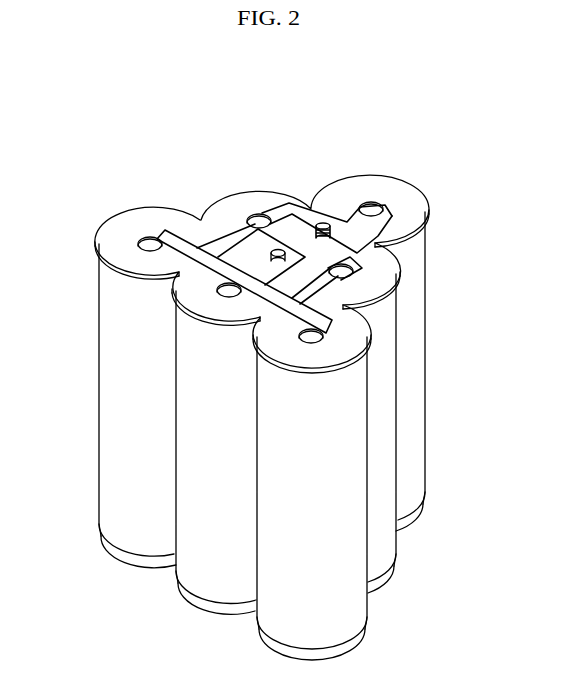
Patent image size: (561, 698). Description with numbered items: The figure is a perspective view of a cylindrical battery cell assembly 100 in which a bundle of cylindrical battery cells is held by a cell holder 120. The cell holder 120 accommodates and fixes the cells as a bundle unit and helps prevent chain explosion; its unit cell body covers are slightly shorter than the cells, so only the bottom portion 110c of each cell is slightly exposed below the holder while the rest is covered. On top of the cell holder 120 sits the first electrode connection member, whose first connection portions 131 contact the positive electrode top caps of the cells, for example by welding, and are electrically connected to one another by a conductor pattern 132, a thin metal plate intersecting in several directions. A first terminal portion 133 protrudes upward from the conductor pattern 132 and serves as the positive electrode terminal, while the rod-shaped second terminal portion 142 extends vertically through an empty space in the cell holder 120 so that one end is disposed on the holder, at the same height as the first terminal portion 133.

The cylindrical battery cell assembly 100 is at (169, 92).
The bottom portion 110c is at (122, 558).
The cell holder 120 is at (431, 341).
The first connection portion 131 is at (147, 238).
The conductor pattern 132 is at (238, 236).
The first terminal portion 133 is at (278, 252).
The rod-shaped second terminal portion 142 is at (323, 225).